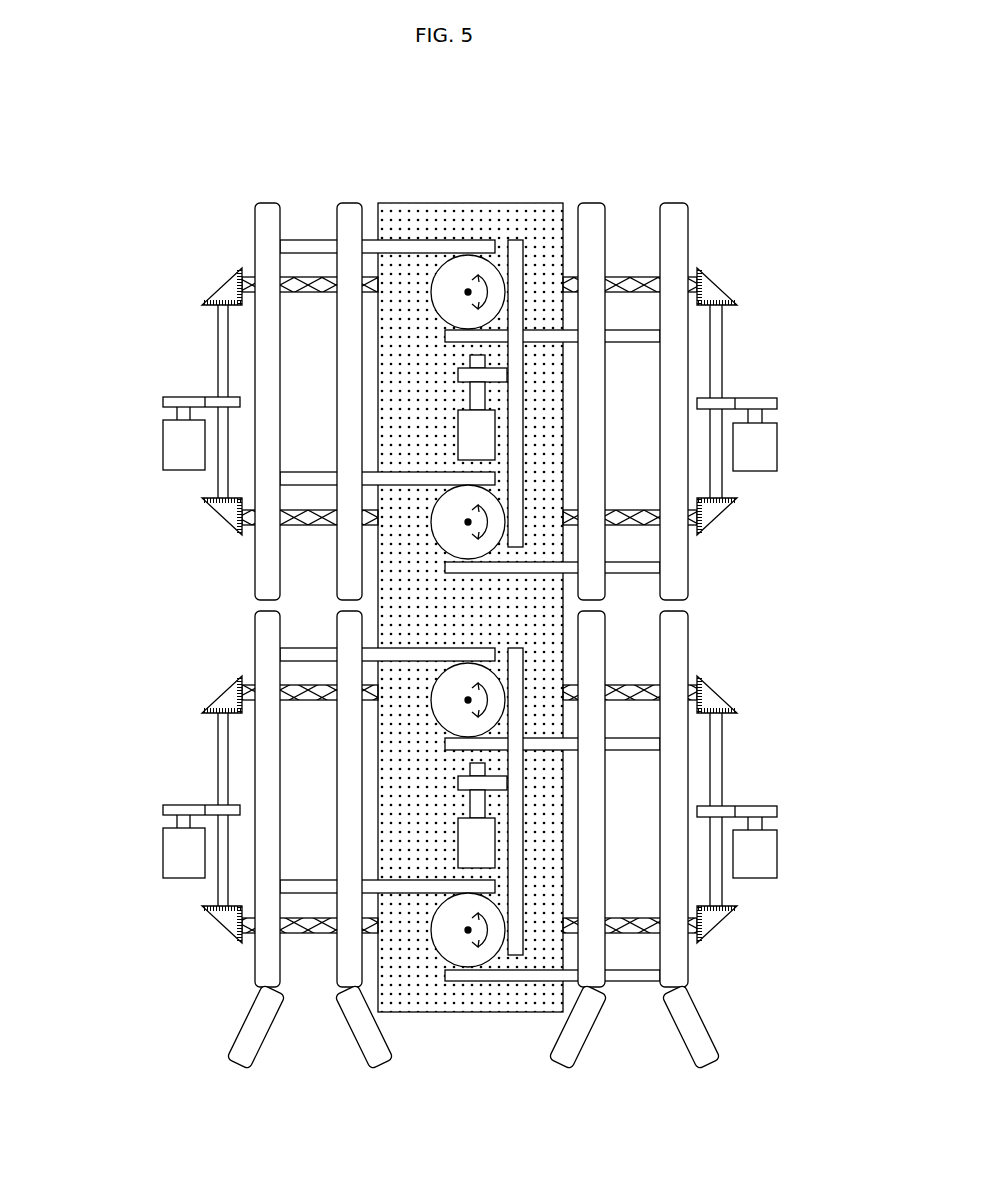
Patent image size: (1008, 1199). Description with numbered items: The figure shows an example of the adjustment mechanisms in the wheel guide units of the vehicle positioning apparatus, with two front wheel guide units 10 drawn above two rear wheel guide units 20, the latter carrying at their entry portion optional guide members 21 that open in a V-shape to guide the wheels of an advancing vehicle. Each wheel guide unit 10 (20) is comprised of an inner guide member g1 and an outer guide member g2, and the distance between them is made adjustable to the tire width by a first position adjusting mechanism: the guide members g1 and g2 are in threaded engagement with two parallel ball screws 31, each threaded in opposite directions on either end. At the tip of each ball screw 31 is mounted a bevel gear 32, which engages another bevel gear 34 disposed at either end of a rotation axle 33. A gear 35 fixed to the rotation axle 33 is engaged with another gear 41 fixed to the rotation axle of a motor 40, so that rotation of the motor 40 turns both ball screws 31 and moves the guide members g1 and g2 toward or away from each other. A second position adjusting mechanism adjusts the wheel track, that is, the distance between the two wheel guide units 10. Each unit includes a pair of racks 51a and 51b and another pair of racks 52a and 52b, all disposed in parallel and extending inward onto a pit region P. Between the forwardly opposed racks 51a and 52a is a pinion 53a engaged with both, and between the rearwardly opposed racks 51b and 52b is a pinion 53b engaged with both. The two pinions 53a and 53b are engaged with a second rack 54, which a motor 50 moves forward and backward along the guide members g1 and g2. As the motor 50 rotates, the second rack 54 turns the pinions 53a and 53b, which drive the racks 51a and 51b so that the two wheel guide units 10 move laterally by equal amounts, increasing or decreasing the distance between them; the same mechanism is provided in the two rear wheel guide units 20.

The front wheel guide unit 10 is at (134, 212).
The rear wheel guide unit 20 is at (128, 1062).
The guide member 21 is at (241, 1066).
The ball screw 31 is at (308, 292).
The bevel gear 32 is at (240, 270).
The rotation axle 33 is at (218, 330).
The bevel gear 34 is at (216, 296).
The gear 35 is at (205, 396).
The motor 40 is at (163, 445).
The gear 41 is at (163, 400).
The motor 50 is at (495, 430).
The rack 51a is at (290, 240).
The rack 51b is at (290, 472).
The rack 52a is at (624, 342).
The rack 52b is at (624, 573).
The pinion 53a is at (445, 315).
The pinion 53b is at (445, 546).
The second rack 54 is at (516, 240).
The pit region P is at (432, 203).
The inner guide member g1 is at (351, 203).
The outer guide member g2 is at (270, 203).